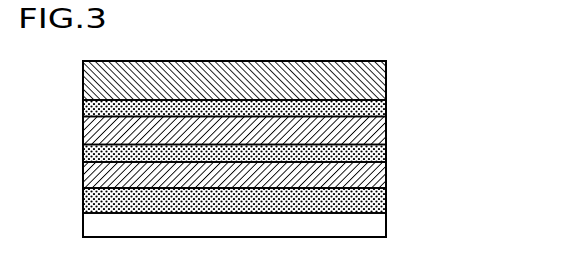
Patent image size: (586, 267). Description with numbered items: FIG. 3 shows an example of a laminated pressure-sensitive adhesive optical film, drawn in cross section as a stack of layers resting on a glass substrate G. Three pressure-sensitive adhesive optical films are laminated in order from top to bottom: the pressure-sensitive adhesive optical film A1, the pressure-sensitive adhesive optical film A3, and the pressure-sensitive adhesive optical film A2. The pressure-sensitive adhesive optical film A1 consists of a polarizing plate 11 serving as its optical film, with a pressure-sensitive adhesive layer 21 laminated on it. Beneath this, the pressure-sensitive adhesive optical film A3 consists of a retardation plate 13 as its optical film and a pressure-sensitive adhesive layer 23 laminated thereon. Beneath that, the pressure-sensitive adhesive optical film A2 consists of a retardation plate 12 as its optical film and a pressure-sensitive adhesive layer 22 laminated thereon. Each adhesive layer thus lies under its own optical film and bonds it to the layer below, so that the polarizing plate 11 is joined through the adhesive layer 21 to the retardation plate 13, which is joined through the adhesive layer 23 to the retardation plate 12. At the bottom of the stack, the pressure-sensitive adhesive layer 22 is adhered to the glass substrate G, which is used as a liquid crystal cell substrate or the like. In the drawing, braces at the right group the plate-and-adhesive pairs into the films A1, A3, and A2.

The polarizing plate 11 is at (386, 81).
The pressure-sensitive adhesive layer 21 is at (386, 108).
The retardation plate 13 is at (386, 129).
The pressure-sensitive adhesive layer 23 is at (386, 154).
The retardation plate 12 is at (386, 172).
The pressure-sensitive adhesive layer 22 is at (386, 202).
The glass substrate G is at (375, 228).
The pressure-sensitive adhesive optical film A1 is at (323, 89).
The pressure-sensitive adhesive optical film A3 is at (323, 137).
The pressure-sensitive adhesive optical film A2 is at (323, 185).